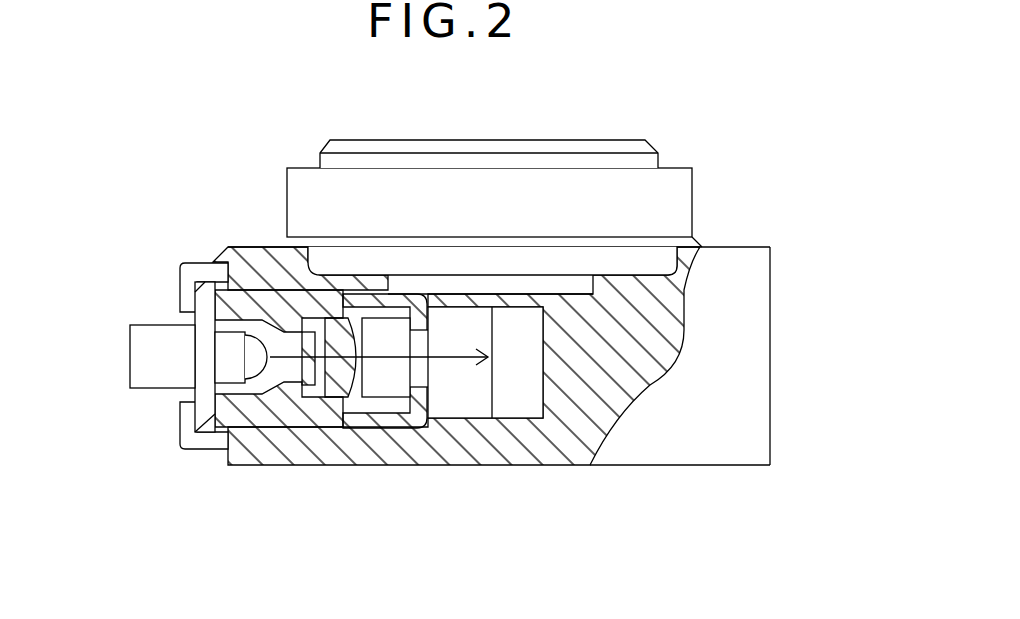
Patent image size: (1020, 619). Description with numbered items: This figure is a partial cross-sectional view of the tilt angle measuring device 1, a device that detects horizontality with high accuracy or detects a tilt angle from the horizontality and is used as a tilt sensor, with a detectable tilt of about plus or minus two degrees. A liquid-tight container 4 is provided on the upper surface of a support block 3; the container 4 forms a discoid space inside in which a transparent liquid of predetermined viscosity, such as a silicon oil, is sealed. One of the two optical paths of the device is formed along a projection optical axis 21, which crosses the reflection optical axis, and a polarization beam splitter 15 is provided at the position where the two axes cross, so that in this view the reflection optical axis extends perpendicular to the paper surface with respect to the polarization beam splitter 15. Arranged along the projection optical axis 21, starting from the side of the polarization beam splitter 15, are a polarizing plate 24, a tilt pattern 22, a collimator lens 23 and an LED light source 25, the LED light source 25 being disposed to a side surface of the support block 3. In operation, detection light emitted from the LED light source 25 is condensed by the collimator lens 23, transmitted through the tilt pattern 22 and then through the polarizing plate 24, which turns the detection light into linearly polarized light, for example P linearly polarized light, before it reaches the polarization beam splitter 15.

The tilt angle measuring device 1 is at (268, 94).
The support block 3 is at (253, 247).
The liquid-tight container 4 is at (628, 140).
The polarization beam splitter 15 is at (473, 420).
The projection optical axis 21 is at (397, 365).
The tilt pattern 22 is at (348, 398).
The collimator lens 23 is at (328, 430).
The polarizing plate 24 is at (422, 372).
The LED light source 25 is at (152, 324).